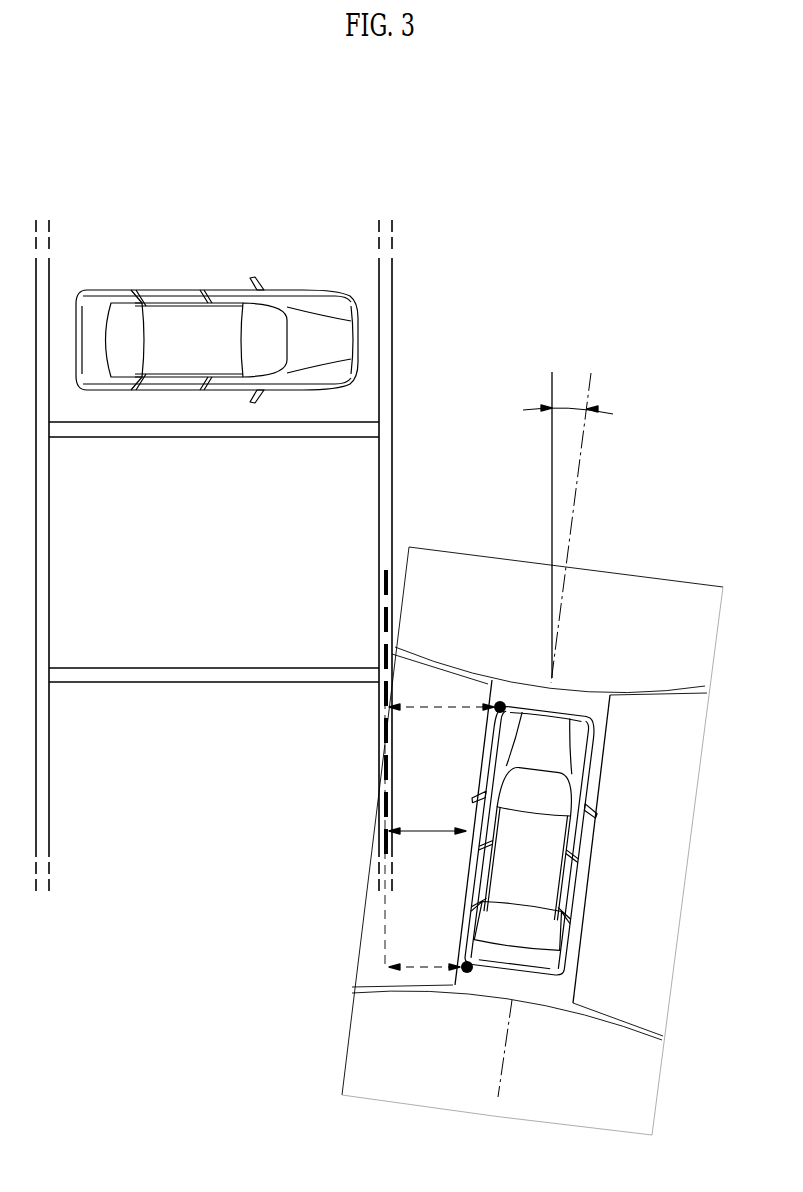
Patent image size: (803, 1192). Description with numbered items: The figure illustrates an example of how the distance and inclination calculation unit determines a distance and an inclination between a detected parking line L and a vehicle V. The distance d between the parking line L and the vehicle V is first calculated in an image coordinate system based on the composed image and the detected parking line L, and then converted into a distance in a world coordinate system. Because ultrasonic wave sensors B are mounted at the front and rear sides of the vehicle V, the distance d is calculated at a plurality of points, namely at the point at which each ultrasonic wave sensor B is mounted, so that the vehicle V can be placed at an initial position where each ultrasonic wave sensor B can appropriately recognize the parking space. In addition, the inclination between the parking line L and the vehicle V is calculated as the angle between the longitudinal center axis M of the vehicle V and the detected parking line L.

The parking line L is at (387, 310).
The longitudinal center axis M is at (577, 488).
The ultrasonic wave sensor B is at (500, 703).
The vehicle V is at (570, 868).
The distance d is at (427, 817).